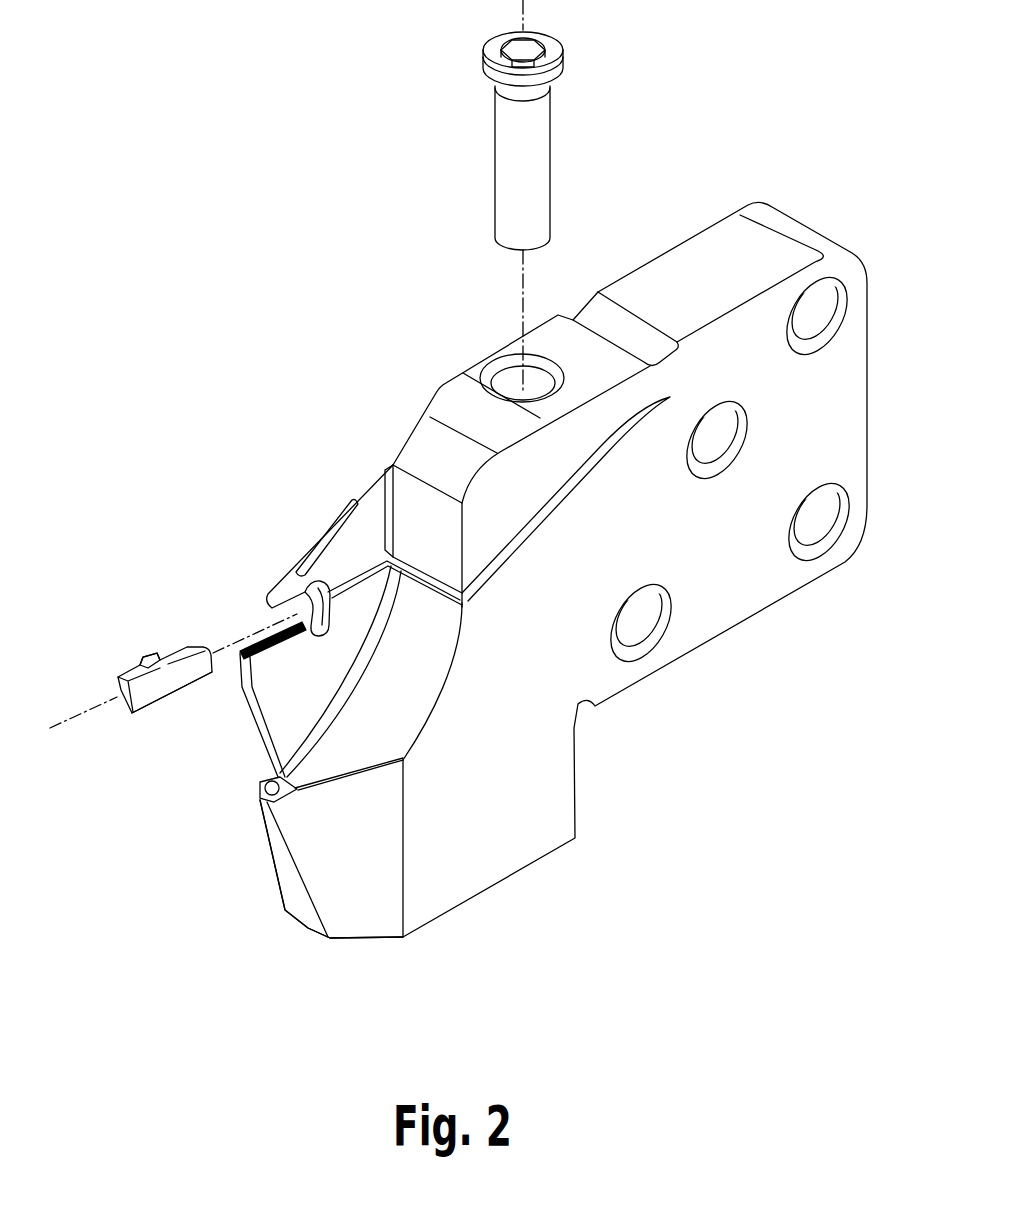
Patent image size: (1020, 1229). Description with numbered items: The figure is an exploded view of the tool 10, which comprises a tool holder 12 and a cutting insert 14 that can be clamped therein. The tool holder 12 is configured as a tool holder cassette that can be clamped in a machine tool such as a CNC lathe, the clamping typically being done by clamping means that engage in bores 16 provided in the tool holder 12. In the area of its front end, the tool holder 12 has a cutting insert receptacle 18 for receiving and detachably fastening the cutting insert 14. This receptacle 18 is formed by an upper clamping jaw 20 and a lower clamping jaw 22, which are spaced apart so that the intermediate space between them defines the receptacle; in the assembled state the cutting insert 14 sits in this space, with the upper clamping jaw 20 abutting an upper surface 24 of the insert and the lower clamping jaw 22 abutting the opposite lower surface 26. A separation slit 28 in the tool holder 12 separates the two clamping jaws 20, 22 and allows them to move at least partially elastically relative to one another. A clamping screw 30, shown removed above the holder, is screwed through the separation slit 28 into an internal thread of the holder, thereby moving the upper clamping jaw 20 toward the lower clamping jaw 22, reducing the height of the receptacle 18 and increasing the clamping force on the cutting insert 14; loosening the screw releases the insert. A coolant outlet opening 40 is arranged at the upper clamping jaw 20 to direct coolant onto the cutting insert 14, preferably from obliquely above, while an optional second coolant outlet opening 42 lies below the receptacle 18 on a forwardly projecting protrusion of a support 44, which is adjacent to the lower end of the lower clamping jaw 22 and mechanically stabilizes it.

The tool 10 is at (222, 240).
The tool holder 12 is at (556, 692).
The cutting insert 14 is at (118, 687).
The bores 16 is at (840, 313).
The cutting insert receptacle 18 is at (262, 608).
The upper clamping jaw 20 is at (373, 477).
The lower clamping jaw 22 is at (275, 705).
The upper surface 24 is at (173, 660).
The lower surface 26 is at (155, 703).
The separation slit 28 is at (560, 500).
The clamping screw 30 is at (545, 140).
The coolant outlet opening 40 is at (340, 510).
The second coolant outlet opening 42 is at (262, 787).
The support 44 is at (292, 887).